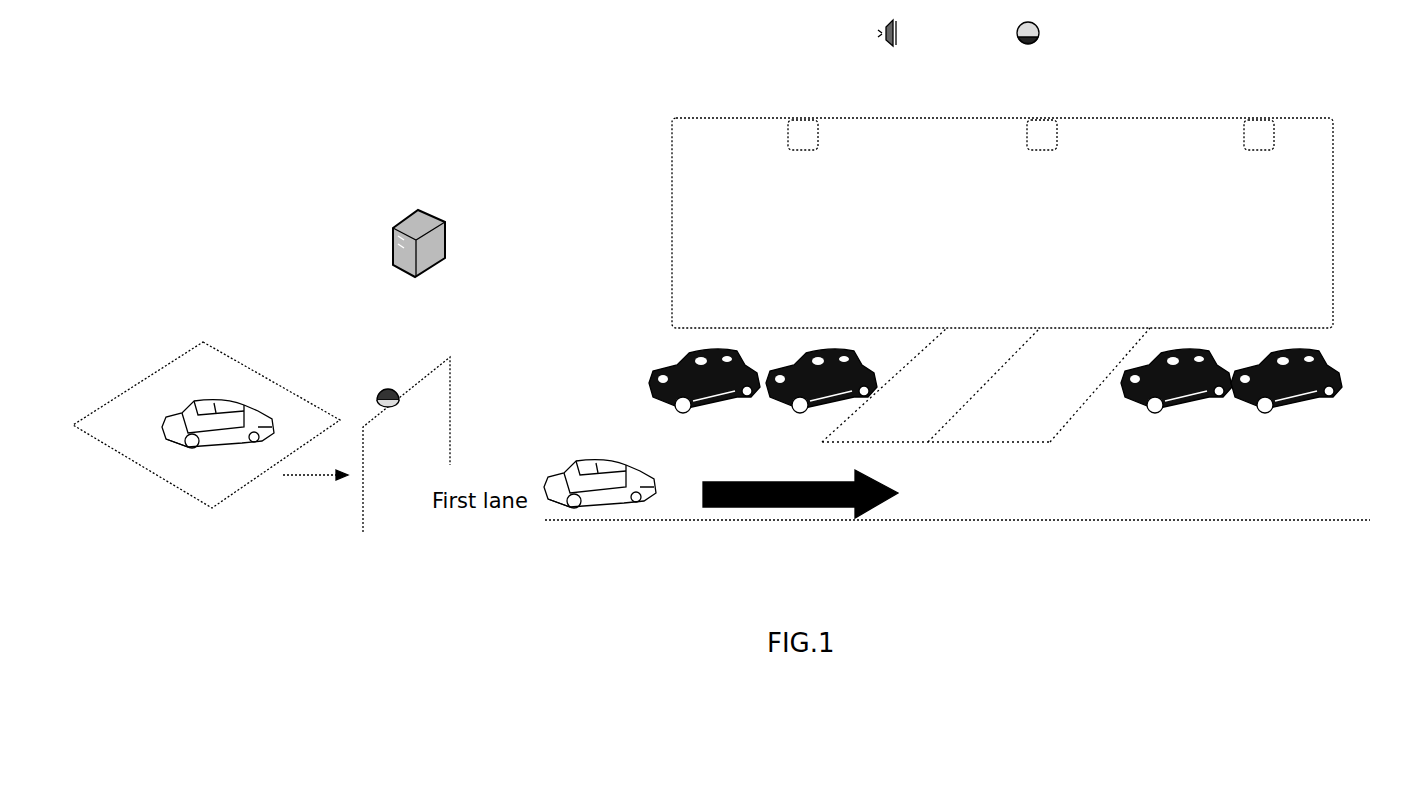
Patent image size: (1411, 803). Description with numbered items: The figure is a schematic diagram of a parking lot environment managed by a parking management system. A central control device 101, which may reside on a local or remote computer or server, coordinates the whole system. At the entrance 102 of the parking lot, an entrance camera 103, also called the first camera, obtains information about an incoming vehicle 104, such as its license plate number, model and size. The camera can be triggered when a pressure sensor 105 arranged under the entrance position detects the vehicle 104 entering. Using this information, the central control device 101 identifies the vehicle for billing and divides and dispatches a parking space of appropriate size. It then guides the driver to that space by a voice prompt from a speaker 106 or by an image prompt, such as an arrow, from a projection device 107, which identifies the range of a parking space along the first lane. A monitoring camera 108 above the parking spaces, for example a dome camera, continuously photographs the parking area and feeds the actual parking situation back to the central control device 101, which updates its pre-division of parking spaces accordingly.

The central control device 101 is at (447, 233).
The entrance 102 is at (453, 397).
The entrance camera 103 is at (396, 386).
The vehicle 104 is at (253, 417).
The pressure sensor 105 is at (223, 350).
The speaker 106 is at (890, 47).
The projection device 107 is at (1034, 150).
The monitoring camera 108 is at (1030, 48).